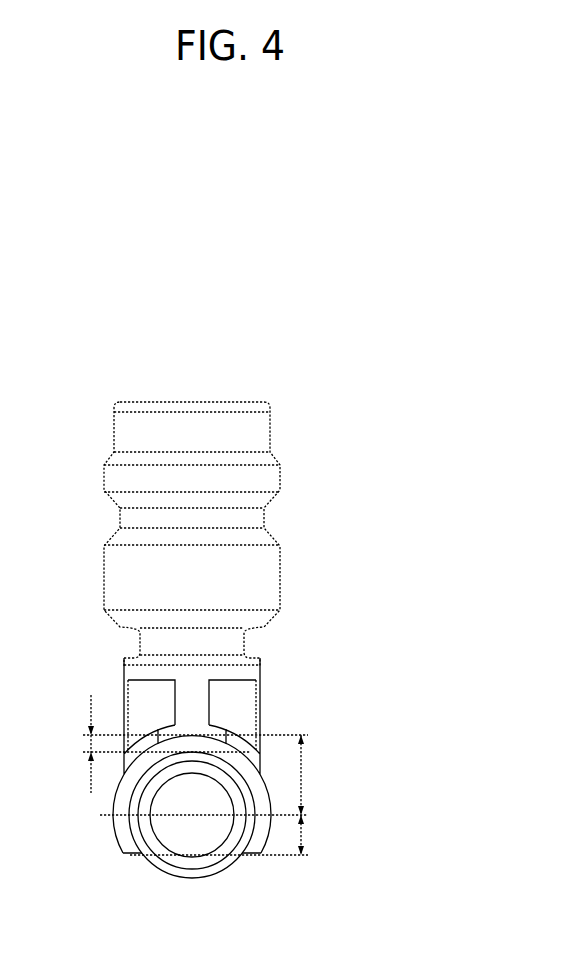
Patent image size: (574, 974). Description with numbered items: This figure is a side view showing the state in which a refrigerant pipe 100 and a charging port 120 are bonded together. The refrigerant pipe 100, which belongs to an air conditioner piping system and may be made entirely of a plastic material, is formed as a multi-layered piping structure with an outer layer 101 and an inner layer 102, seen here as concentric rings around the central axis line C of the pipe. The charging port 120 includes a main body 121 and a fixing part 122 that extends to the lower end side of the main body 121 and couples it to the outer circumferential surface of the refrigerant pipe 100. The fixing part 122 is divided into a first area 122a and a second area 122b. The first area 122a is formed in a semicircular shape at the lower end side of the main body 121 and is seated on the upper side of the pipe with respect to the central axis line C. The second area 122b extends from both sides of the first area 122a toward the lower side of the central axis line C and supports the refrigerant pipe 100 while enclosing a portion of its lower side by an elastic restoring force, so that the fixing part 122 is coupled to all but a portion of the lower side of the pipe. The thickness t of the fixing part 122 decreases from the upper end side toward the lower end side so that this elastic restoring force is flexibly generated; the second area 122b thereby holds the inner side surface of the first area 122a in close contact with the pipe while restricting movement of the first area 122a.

The charging port 120 is at (305, 372).
The main body 121 is at (280, 567).
The fixing part 122 is at (390, 788).
The first area 122a is at (307, 775).
The second area 122b is at (307, 835).
The refrigerant pipe 100 is at (134, 885).
The outer layer 101 is at (221, 876).
The inner layer 102 is at (170, 858).
The central axis line C is at (195, 817).
The thickness t is at (87, 743).